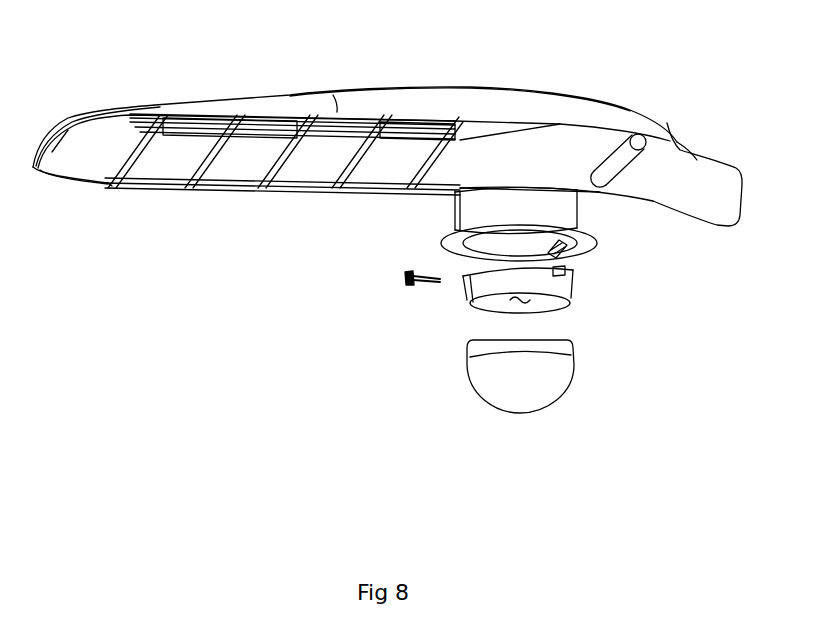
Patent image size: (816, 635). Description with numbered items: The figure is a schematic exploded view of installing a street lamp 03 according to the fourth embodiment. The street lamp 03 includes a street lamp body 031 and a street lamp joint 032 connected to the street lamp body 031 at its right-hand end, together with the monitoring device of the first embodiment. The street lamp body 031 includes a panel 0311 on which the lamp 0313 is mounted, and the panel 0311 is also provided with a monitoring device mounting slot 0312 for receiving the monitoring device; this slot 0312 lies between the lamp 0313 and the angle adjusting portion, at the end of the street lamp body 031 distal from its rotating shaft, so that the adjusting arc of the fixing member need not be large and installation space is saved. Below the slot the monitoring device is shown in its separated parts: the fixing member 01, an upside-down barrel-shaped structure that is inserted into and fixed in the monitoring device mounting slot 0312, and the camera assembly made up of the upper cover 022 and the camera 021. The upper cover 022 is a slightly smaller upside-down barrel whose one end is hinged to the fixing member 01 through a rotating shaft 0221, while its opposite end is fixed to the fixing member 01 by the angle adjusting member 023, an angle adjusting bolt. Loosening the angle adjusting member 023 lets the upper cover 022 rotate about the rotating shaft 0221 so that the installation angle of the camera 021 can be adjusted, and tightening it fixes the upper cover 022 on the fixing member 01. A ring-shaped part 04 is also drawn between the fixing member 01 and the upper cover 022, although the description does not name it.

The street lamp 03 is at (401, 67).
The street lamp body 031 is at (480, 100).
The panel 0311 is at (97, 140).
The monitoring device mounting slot 0312 is at (530, 140).
The lamp 0313 is at (177, 143).
The street lamp joint 032 is at (697, 172).
The fixing member 01 is at (450, 213).
The flange ring 04 is at (587, 252).
The rotating shaft 0221 is at (556, 256).
The upper cover 022 is at (560, 297).
The camera 021 is at (543, 392).
The angle adjusting member 023 is at (412, 283).